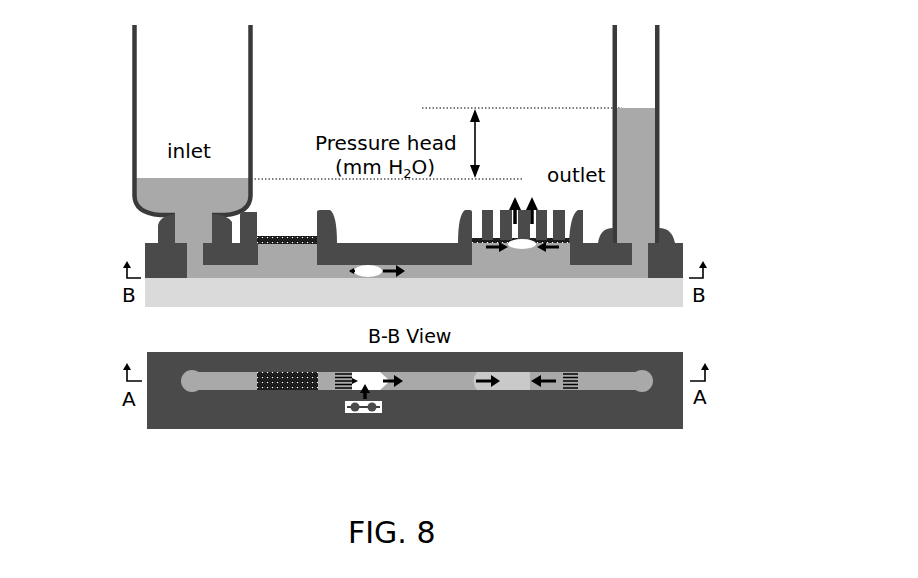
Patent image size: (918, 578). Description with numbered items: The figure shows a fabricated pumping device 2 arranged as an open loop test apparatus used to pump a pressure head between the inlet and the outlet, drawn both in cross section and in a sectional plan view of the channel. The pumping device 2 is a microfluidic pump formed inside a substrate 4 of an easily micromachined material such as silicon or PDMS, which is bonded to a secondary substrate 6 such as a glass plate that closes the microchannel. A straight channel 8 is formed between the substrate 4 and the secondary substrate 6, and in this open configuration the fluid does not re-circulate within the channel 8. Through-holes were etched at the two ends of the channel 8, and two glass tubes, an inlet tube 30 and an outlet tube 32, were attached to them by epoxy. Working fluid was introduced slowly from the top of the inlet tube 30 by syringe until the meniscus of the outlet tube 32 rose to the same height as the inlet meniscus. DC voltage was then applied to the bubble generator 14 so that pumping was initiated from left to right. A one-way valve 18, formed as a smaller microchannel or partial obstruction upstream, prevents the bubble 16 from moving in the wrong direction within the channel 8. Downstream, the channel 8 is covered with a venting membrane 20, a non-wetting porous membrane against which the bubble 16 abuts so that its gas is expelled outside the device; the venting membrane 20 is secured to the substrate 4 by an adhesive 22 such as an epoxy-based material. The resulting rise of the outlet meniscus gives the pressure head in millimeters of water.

The pumping device 2 is at (411, 259).
The substrate 4 is at (140, 258).
The secondary substrate 6 is at (656, 290).
The channel 8 is at (446, 280).
The bubble generator 14 is at (368, 420).
The bubble 16 is at (362, 278).
The one-way valve 18 is at (341, 394).
The venting membrane 20 is at (288, 238).
The adhesive 22 is at (154, 240).
The inlet tube 30 is at (130, 73).
The outlet tube 32 is at (664, 109).